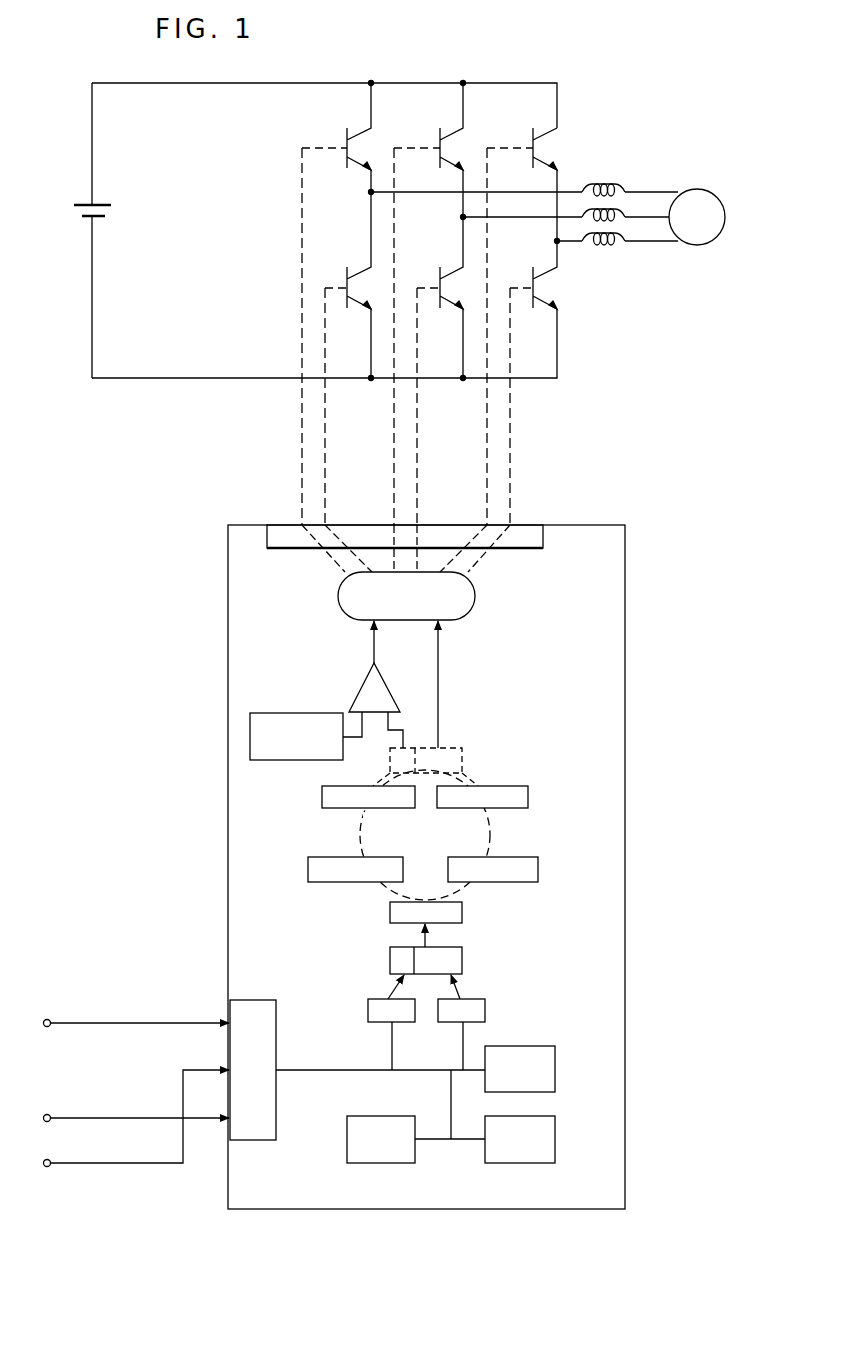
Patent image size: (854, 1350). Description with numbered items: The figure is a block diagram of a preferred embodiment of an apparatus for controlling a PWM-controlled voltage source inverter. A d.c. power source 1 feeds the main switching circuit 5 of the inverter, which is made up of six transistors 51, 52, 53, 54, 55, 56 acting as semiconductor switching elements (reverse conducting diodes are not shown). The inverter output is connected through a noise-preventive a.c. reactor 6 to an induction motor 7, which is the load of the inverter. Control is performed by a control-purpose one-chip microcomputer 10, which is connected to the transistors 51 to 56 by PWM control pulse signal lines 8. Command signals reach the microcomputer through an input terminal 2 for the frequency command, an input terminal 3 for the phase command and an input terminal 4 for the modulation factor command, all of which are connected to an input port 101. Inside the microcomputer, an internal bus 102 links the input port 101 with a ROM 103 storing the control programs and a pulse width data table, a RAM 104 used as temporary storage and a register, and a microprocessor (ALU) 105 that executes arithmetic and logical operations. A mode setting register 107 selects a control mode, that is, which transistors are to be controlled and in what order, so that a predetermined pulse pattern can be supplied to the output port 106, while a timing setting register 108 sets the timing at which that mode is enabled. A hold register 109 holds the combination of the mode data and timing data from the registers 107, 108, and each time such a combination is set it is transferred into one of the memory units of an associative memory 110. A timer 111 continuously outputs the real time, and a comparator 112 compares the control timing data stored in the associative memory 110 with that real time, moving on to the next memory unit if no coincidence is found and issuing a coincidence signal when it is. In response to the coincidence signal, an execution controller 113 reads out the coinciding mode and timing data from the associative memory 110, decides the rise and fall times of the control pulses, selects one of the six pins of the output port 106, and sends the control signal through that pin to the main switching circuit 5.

The d.c. power source 1 is at (74, 207).
The input terminal 2 is at (47, 1020).
The input terminal 3 is at (47, 1115).
The input terminal 4 is at (47, 1167).
The main switching circuit 5 is at (490, 59).
The transistor 51 is at (366, 140).
The transistor 52 is at (463, 140).
The transistor 53 is at (556, 145).
The transistor 54 is at (356, 267).
The transistor 55 is at (452, 268).
The transistor 56 is at (544, 268).
The noise-preventive a.c. reactor 6 is at (605, 248).
The induction motor 7 is at (697, 189).
The PWM control pulse signal lines 8 is at (530, 414).
The one-chip microcomputer 10 is at (228, 560).
The input port 101 is at (250, 1000).
The internal bus 102 is at (312, 1070).
The ROM 103 is at (380, 1163).
The RAM 104 is at (555, 1140).
The microprocessor (ALU) 105 is at (555, 1068).
The output port 106 is at (543, 548).
The mode setting register 107 is at (485, 1012).
The timing setting register 108 is at (368, 1015).
The hold register 109 is at (462, 962).
The associative memory 110 is at (492, 831).
The timer 111 is at (265, 713).
The comparator 112 is at (364, 678).
The execution controller 113 is at (475, 596).